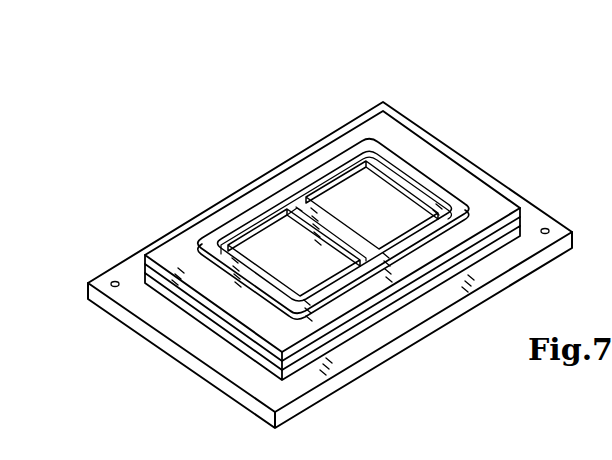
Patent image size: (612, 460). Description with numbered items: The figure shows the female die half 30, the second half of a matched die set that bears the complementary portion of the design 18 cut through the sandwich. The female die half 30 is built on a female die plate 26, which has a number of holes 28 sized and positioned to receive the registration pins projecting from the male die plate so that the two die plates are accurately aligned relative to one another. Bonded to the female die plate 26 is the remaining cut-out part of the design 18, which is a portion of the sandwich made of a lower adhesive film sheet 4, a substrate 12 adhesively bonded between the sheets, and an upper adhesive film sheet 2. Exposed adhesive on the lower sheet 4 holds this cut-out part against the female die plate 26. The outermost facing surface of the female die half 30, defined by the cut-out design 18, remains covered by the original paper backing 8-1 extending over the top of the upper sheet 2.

The female die half 30 is at (317, 233).
The female die plate 26 is at (183, 327).
The holes 28 is at (111, 281).
The lower adhesive film sheet 4 is at (297, 366).
The substrate 12 is at (317, 342).
The upper adhesive film sheet 2 is at (337, 323).
The paper backing 8-1 is at (375, 288).
The design 18 is at (333, 180).